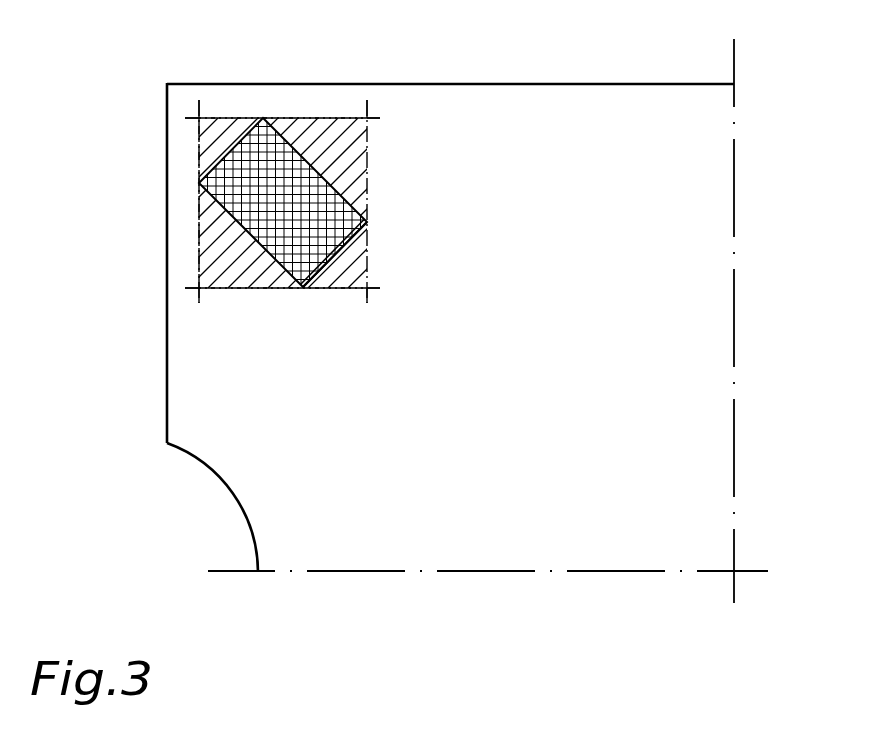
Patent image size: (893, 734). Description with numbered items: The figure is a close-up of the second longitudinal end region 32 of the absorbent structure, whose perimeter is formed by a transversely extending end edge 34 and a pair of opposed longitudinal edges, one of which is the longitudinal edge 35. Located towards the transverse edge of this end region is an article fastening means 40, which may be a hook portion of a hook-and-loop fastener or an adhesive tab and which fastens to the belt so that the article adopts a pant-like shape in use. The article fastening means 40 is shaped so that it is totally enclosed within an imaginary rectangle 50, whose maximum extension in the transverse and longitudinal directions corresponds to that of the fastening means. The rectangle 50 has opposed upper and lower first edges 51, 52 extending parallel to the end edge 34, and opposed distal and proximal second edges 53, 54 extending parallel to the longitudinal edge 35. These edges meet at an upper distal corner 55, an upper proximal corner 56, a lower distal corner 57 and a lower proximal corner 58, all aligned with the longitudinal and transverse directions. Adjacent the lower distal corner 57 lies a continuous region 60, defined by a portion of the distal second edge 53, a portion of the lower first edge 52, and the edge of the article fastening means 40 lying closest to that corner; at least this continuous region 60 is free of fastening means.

The second longitudinal end region 32 is at (540, 378).
The transversely extending end edge 34 is at (490, 84).
The longitudinal edge 35 is at (167, 407).
The article fastening means 40 is at (258, 153).
The imaginary rectangle 50 is at (376, 173).
The upper first edge 51 is at (298, 118).
The lower first edge 52 is at (270, 290).
The distal second edge 53 is at (198, 225).
The proximal second edge 54 is at (367, 242).
The upper distal corner 55 is at (198, 115).
The upper proximal corner 56 is at (368, 118).
The lower distal corner 57 is at (198, 282).
The lower proximal corner 58 is at (368, 284).
The continuous region 60 is at (232, 264).